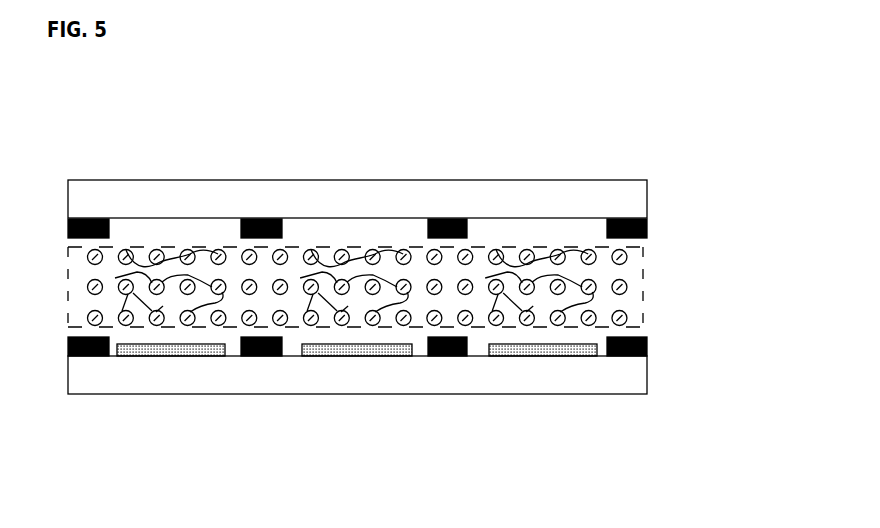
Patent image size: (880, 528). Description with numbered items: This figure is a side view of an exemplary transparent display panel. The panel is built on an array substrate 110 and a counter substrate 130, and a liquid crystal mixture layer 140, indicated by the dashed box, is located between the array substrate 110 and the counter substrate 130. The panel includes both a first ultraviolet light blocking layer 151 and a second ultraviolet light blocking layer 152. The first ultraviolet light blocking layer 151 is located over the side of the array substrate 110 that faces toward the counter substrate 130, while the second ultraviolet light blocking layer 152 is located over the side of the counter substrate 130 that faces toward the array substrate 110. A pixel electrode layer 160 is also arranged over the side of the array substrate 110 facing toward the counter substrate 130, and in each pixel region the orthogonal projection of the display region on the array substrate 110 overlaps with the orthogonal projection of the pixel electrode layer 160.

The array substrate 110 is at (397, 395).
The counter substrate 130 is at (493, 180).
The liquid crystal mixture layer 140 is at (642, 273).
The first ultraviolet light blocking layer 151 is at (250, 357).
The second ultraviolet light blocking layer 152 is at (277, 218).
The pixel electrode layer 160 is at (572, 356).